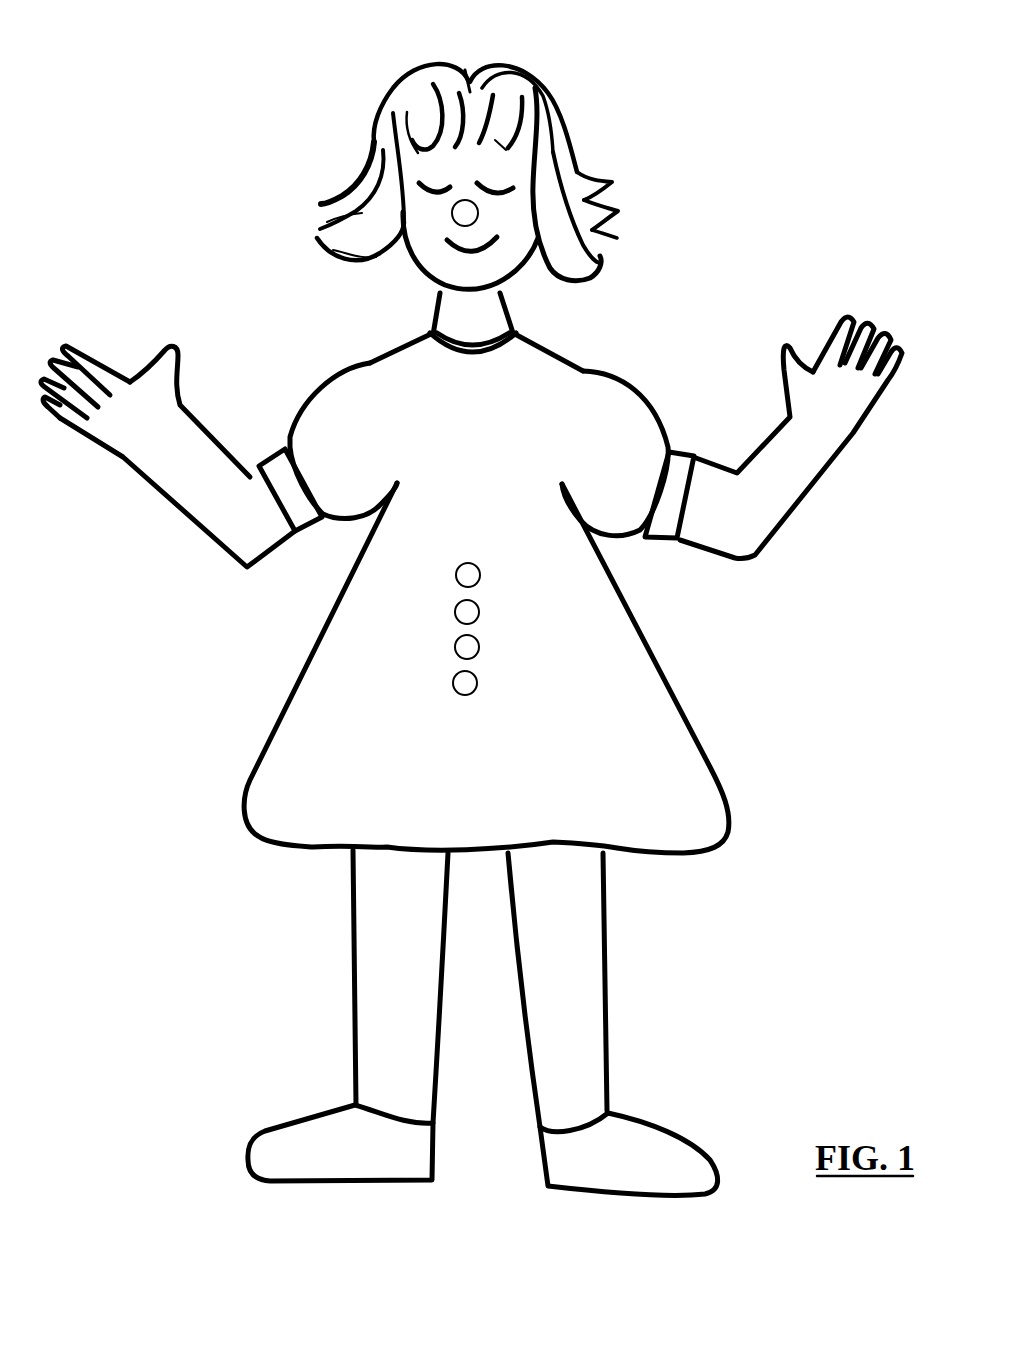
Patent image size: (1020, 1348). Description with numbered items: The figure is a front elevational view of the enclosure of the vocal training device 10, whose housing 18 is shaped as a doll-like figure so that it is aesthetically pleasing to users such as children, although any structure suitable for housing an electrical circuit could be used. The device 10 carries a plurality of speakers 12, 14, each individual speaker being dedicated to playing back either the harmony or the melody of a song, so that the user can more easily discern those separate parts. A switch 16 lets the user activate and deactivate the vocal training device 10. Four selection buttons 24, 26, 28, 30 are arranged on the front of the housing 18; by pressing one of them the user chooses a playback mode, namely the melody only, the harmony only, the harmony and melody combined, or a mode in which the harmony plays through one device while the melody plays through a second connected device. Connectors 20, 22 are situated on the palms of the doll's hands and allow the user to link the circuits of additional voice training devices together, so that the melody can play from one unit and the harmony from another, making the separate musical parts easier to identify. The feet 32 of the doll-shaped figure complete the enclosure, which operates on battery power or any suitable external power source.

The vocal training device 10 is at (498, 36).
The speaker 12 is at (380, 120).
The speaker 14 is at (563, 134).
The switch 16 is at (479, 213).
The housing 18 is at (378, 353).
The connector 20 is at (123, 437).
The connector 22 is at (840, 397).
The selection button 24 is at (480, 576).
The selection button 26 is at (455, 612).
The selection button 28 is at (480, 648).
The selection button 30 is at (452, 684).
The shoes 32 is at (280, 1174).